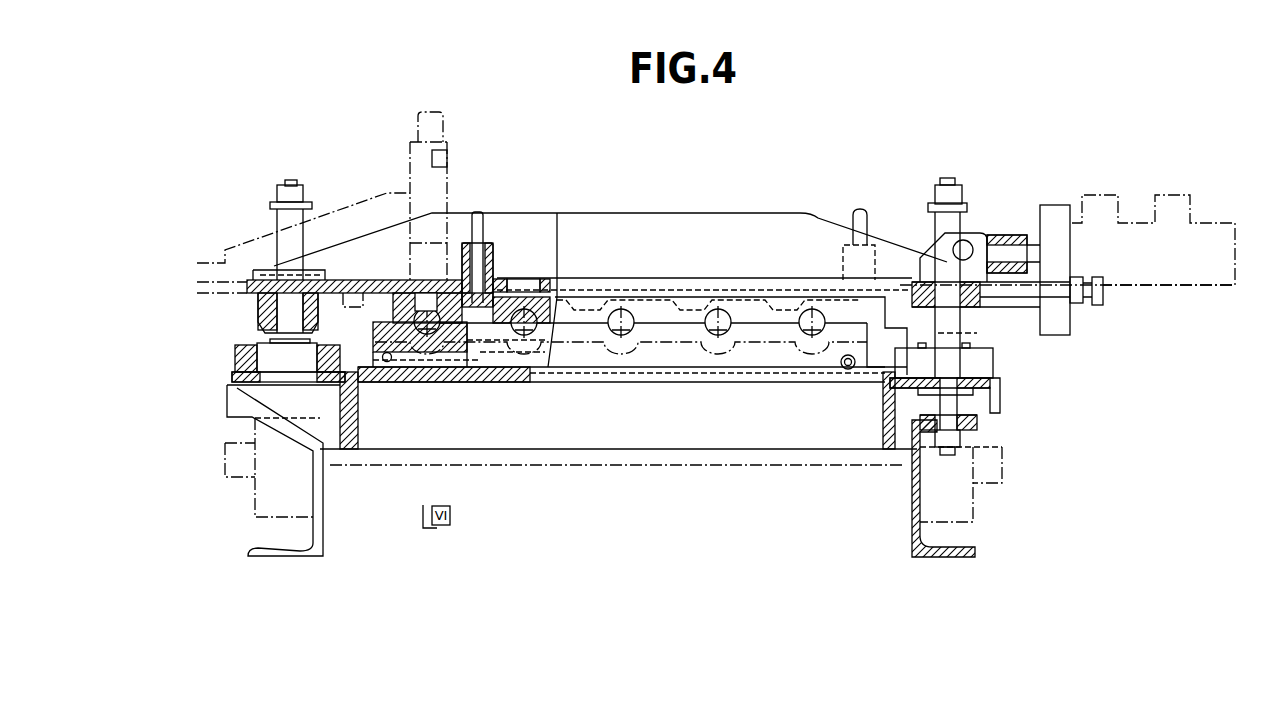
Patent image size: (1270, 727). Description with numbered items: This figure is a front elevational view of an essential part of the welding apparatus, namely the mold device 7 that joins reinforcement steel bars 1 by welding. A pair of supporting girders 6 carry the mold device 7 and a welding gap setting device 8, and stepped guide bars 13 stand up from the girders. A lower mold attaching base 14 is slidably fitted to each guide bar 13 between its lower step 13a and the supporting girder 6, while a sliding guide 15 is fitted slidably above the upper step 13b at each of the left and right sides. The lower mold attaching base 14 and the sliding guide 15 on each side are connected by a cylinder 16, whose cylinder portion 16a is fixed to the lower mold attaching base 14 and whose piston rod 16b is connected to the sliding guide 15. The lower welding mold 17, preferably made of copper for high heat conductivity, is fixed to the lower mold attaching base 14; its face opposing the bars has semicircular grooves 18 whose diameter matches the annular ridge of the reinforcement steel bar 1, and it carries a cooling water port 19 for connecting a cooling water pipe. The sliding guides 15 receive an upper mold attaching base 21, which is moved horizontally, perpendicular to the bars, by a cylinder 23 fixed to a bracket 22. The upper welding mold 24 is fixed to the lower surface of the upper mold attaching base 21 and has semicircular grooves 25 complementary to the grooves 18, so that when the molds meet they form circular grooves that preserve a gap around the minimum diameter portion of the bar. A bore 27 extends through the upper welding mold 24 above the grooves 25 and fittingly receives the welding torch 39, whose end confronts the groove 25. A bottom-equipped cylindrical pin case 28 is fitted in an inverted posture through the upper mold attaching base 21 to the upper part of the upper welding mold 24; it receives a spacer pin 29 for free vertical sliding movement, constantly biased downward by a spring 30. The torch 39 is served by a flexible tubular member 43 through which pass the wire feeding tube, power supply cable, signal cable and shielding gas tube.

The reinforcement steel bar 1 is at (545, 367).
The supporting girder 6 is at (318, 516).
The mold device 7 is at (656, 318).
The welding gap setting device 8 is at (490, 237).
The stepped guide bar 13 is at (296, 217).
The lower step 13a is at (975, 384).
The upper step 13b is at (950, 322).
The lower mold attaching base 14 is at (243, 378).
The sliding guide 15 is at (255, 296).
The cylinder 16 is at (263, 491).
The cylinder portion 16a is at (262, 345).
The piston rod 16b is at (277, 338).
The lower welding mold 17 is at (393, 334).
The semicircular groove 18 is at (623, 336).
The cooling water port 19 is at (388, 362).
The upper mold attaching base 21 is at (353, 300).
The bracket 22 is at (1058, 215).
The cylinder 23 is at (1168, 205).
The upper welding mold 24 is at (588, 317).
The semicircular groove 25 is at (618, 308).
The bore 27 is at (413, 250).
The pin case 28 is at (557, 227).
The spacer pin 29 is at (475, 356).
The spring 30 is at (497, 258).
The welding torch 39 is at (447, 160).
The flexible tubular member 43 is at (437, 130).